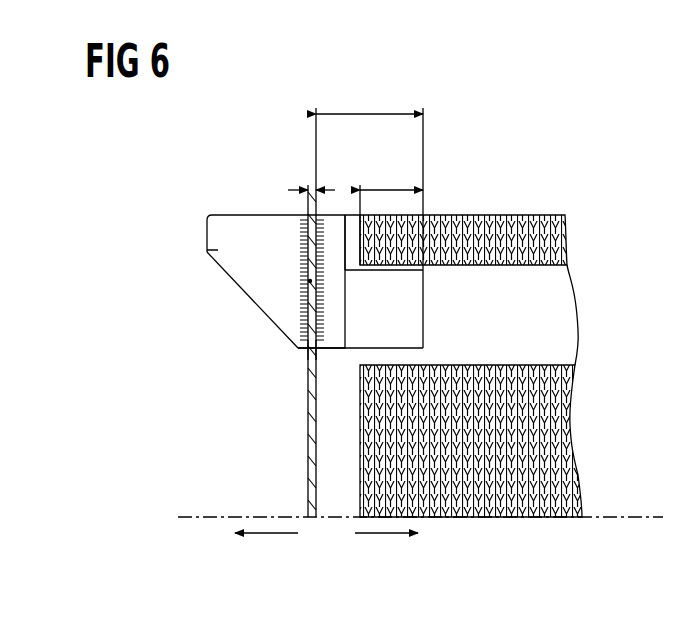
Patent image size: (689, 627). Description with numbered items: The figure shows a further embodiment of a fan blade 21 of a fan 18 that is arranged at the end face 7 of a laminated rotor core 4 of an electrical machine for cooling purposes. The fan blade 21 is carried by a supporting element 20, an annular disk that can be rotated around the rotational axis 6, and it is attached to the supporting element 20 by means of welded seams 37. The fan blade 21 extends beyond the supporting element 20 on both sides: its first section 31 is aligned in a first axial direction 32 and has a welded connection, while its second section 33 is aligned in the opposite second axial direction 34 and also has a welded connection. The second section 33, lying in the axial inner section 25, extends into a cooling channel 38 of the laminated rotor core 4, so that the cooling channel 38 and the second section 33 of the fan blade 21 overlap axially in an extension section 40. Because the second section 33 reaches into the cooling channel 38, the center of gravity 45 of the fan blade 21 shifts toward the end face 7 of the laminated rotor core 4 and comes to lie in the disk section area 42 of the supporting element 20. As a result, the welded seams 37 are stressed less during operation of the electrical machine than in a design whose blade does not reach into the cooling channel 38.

The laminated rotor core 4 is at (537, 243).
The rotational axis 6 is at (190, 515).
The end face 7 is at (357, 495).
The fan 18 is at (236, 268).
The supporting element 20 is at (308, 437).
The fan blade 21 is at (225, 283).
The axial inner section 25 is at (368, 112).
The first section 31 is at (207, 255).
The first axial direction 32 is at (270, 535).
The second section 33 is at (337, 220).
The second axial direction 34 is at (375, 535).
The welded seams 37 is at (303, 352).
The cooling channel 38 is at (558, 318).
The extension section 40 is at (392, 187).
The disk section area 42 is at (313, 188).
The center of gravity 45 is at (310, 282).